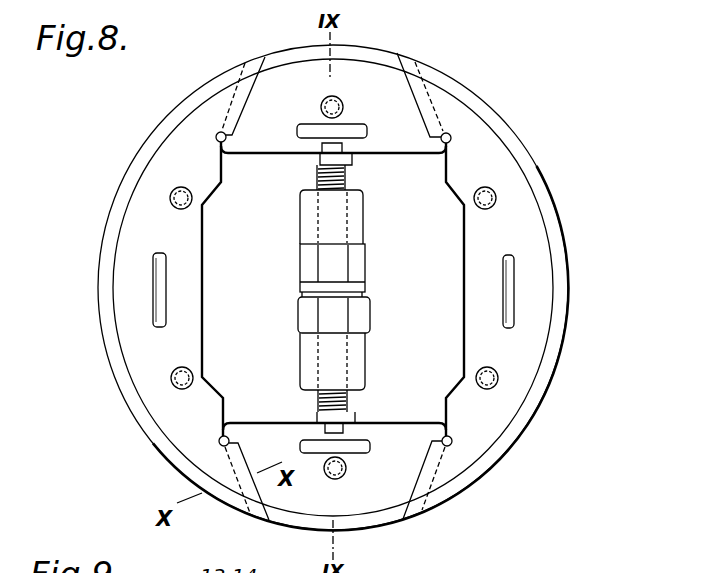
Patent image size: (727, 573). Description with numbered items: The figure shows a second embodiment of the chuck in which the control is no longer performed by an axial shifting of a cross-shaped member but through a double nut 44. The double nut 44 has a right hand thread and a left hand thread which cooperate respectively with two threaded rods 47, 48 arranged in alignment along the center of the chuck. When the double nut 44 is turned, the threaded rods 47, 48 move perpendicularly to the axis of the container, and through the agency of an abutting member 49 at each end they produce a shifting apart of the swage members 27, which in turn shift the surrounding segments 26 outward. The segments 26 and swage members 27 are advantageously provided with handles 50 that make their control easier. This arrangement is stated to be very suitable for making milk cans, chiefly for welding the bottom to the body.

The segments 26 is at (130, 248).
The swage members 27 is at (355, 80).
The double nut 44 is at (357, 357).
The threaded rod 47 is at (348, 180).
The threaded rod 48 is at (349, 399).
The abutting member 49 is at (327, 158).
The handles 50 is at (160, 297).